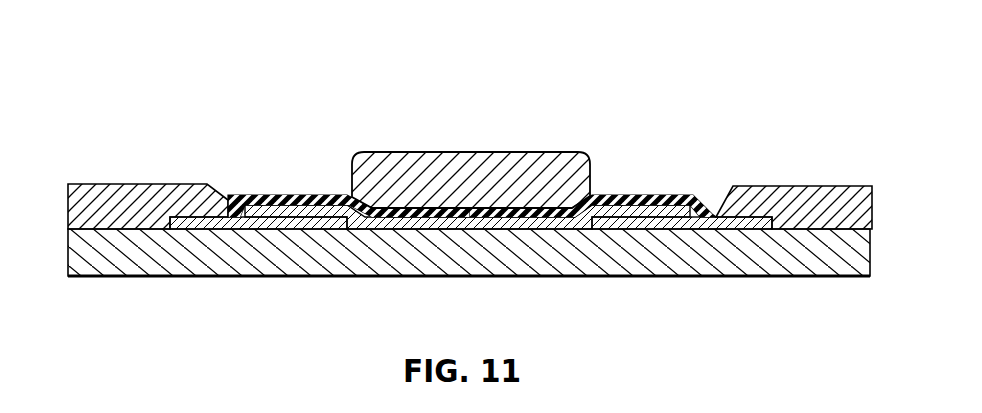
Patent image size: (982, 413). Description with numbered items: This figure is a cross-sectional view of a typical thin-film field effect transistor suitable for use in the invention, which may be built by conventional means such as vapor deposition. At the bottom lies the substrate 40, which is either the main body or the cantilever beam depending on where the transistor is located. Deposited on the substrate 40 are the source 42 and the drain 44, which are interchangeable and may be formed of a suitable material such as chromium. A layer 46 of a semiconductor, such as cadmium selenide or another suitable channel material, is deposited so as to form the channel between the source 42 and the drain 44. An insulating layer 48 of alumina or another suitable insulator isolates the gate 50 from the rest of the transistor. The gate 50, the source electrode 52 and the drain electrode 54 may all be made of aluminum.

The substrate 40 is at (467, 272).
The source 42 is at (240, 228).
The drain 44 is at (695, 228).
The semiconductor layer 46 is at (308, 195).
The insulating layer 48 is at (646, 194).
The gate 50 is at (462, 152).
The source electrode 52 is at (133, 184).
The drain electrode 54 is at (792, 186).